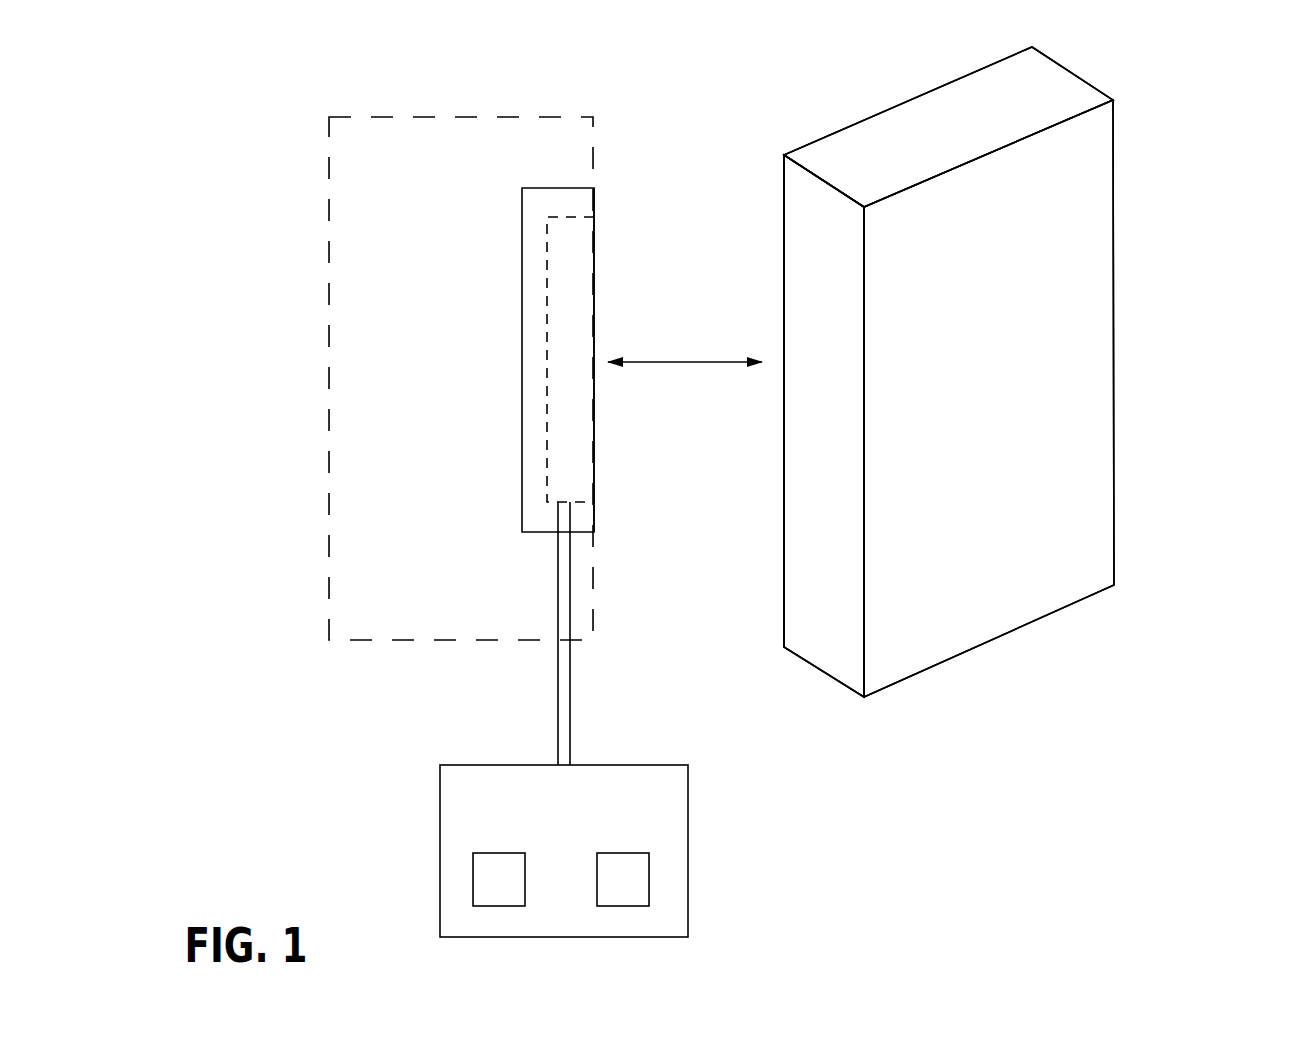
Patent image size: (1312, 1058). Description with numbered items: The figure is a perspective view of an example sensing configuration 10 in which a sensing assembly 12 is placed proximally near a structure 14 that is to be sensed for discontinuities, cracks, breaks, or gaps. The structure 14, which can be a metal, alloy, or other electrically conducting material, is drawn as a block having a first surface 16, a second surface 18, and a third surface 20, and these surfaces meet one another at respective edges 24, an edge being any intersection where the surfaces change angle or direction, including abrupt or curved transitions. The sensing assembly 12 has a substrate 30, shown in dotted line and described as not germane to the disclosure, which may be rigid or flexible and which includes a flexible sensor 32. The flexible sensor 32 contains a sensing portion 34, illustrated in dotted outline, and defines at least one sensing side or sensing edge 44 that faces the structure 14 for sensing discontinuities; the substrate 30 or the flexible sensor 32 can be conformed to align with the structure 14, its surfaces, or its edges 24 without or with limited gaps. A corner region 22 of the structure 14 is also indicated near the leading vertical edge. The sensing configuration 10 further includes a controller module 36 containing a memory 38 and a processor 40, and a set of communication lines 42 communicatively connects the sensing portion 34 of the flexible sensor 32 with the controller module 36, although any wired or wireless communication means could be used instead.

The sensing configuration 10 is at (686, 67).
The sensing assembly 12 is at (305, 167).
The structure 14 is at (1133, 215).
The first surface 16 is at (944, 140).
The second surface 18 is at (818, 393).
The third surface 20 is at (943, 393).
The edge of container 22 is at (780, 230).
The edge 24 is at (788, 249).
The substrate 30 is at (328, 355).
The flexible sensor 32 is at (595, 466).
The sensing portion 34 is at (545, 237).
The controller module 36 is at (551, 892).
The memory 38 is at (487, 892).
The processor 40 is at (611, 892).
The set of communication lines 42 is at (570, 702).
The sensing side 44 is at (594, 296).